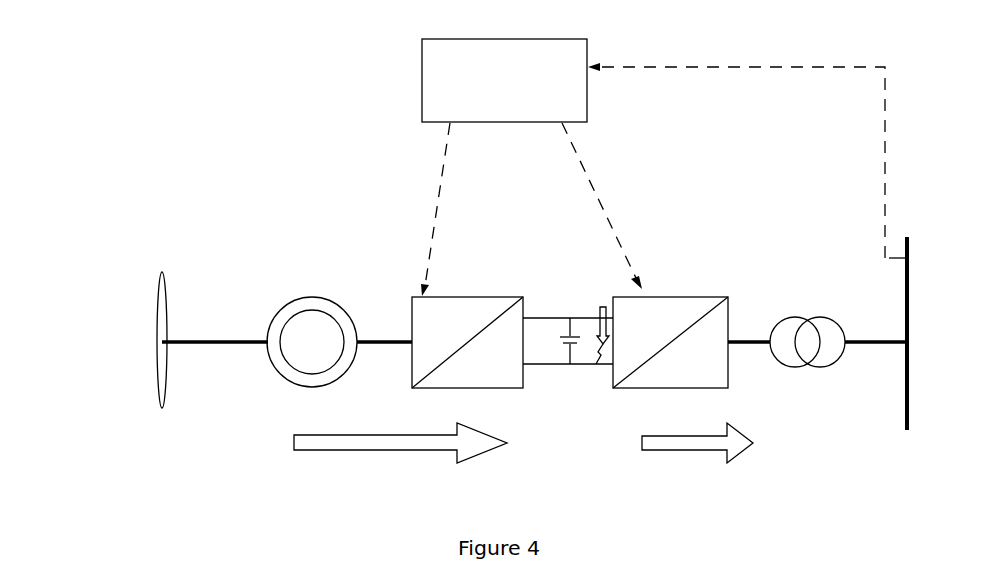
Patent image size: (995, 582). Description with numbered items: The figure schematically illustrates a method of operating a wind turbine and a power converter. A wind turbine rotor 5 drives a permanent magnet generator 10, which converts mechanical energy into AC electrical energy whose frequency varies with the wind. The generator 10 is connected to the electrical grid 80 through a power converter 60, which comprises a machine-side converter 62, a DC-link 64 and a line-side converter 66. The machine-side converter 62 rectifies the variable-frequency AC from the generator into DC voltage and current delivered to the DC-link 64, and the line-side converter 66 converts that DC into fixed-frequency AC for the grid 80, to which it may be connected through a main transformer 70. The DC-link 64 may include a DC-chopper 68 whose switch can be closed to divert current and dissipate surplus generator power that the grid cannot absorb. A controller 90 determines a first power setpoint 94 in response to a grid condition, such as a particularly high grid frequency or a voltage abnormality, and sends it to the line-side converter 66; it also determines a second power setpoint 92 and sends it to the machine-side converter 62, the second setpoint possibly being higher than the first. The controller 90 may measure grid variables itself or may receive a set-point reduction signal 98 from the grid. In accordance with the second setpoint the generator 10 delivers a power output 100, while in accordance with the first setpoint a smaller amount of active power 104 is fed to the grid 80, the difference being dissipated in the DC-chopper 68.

The wind turbine rotor 5 is at (157, 312).
The generator 10 is at (286, 288).
The power converter 60 is at (570, 353).
The machine-side converter 62 is at (490, 297).
The DC-link 64 is at (577, 318).
The line-side converter 66 is at (660, 297).
The DC-chopper 68 is at (591, 366).
The main transformer 70 is at (818, 317).
The grid 80 is at (924, 338).
The controller 90 is at (588, 53).
The second power setpoint 92 is at (428, 209).
The first power setpoint 94 is at (602, 206).
The set-point reduction signal 98 is at (747, 160).
The power output 100 is at (400, 453).
The active power 104 is at (697, 455).